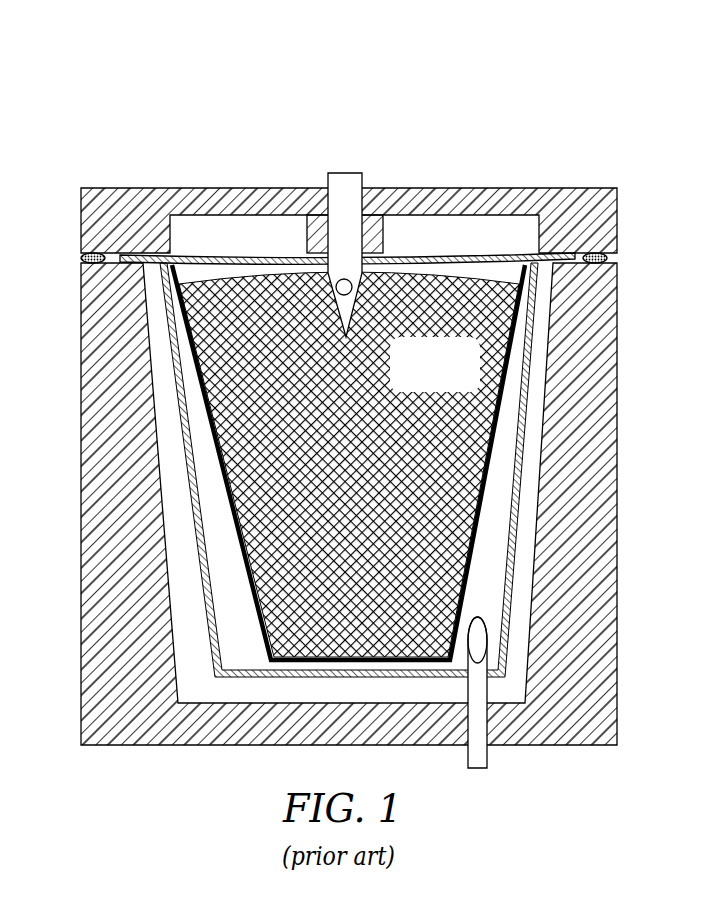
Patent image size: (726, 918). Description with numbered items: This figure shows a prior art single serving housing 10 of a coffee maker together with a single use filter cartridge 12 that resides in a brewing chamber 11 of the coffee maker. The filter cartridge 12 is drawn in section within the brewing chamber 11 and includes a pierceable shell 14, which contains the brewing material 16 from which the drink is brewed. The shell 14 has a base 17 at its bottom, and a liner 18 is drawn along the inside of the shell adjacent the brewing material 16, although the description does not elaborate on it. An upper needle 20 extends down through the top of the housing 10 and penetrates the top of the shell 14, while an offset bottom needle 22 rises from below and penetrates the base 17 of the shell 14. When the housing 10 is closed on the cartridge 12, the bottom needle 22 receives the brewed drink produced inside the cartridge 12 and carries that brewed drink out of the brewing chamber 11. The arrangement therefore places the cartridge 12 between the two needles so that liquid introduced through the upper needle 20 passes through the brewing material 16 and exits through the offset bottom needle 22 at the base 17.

The single serving housing 10 is at (578, 187).
The brewing chamber 11 is at (525, 573).
The single use filter cartridge 12 is at (438, 288).
The pierceable shell 14 is at (400, 253).
The brewing material 16 is at (439, 372).
The base 17 is at (508, 630).
The crucible liner 18 is at (487, 478).
The upper needle 20 is at (347, 187).
The offset bottom needle 22 is at (478, 770).